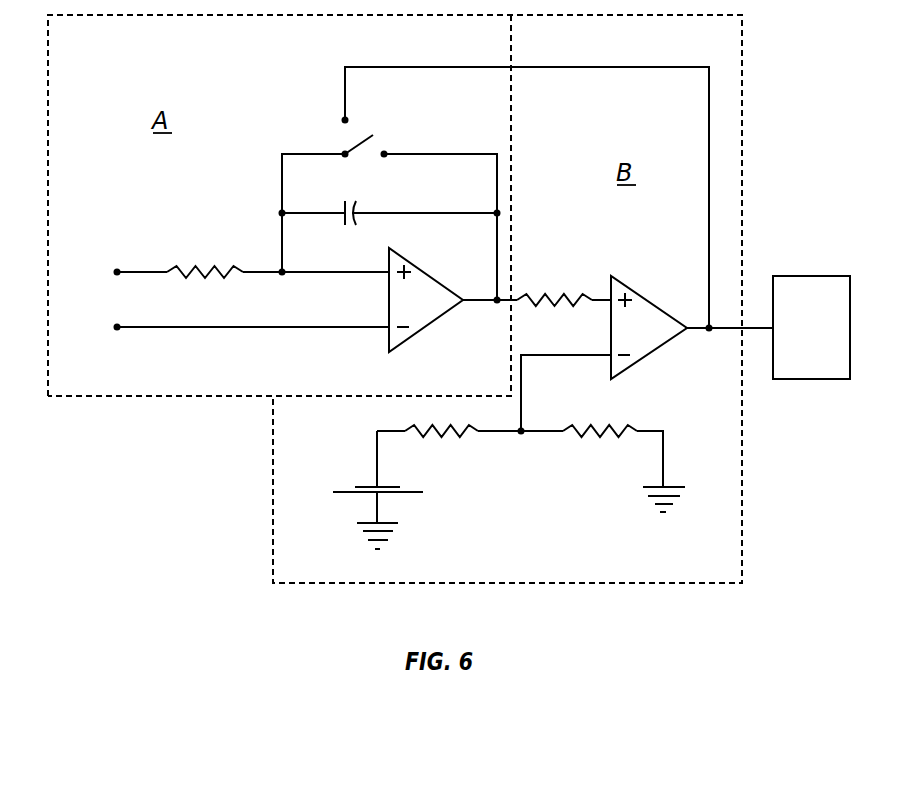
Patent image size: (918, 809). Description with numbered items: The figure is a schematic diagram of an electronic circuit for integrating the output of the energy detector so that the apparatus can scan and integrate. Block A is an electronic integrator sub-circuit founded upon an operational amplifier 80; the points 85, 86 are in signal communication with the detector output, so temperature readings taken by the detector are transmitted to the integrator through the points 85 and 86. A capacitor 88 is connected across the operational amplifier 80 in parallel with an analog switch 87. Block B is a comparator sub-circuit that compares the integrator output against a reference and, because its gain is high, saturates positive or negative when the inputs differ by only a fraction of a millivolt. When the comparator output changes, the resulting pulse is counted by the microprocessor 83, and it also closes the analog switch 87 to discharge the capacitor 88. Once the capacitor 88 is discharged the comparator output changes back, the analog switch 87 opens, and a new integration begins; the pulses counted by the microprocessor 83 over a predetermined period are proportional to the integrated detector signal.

The operational amplifier 80 is at (432, 313).
The microprocessor 83 is at (825, 341).
The point 85 is at (117, 270).
The point 86 is at (117, 329).
The analog switch 87 is at (352, 144).
The capacitor 88 is at (355, 210).